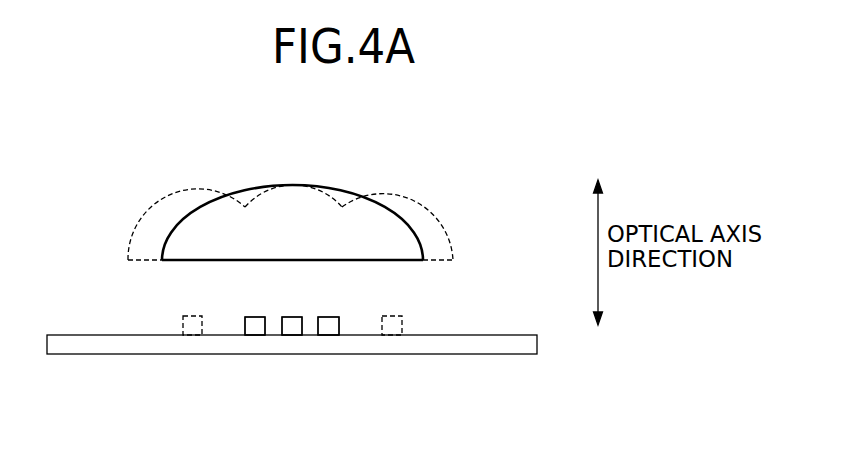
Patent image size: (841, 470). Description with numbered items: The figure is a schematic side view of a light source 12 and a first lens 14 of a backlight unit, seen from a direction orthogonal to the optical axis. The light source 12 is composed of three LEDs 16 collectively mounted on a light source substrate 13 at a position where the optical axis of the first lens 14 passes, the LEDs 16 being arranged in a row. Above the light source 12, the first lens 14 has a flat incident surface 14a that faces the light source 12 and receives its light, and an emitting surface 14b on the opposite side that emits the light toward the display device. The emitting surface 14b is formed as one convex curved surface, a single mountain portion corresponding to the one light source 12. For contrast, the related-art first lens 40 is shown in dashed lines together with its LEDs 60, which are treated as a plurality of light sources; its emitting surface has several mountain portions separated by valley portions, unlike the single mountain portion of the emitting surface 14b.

The light source 12 is at (238, 295).
The light source substrate 13 is at (490, 357).
The first lens 14 is at (417, 223).
The incident surface 14a is at (393, 262).
The emitting surface 14b is at (342, 205).
The LED 16 is at (241, 331).
The first lens in the related art 40 is at (460, 236).
The LED in the related art 60 is at (183, 335).